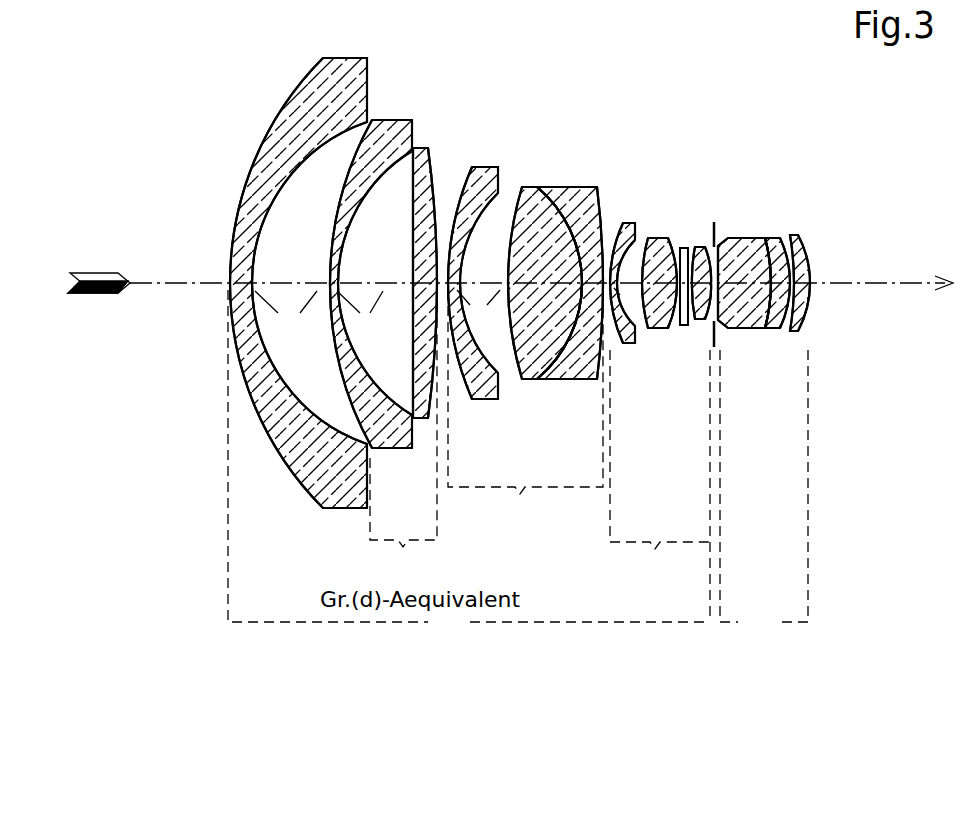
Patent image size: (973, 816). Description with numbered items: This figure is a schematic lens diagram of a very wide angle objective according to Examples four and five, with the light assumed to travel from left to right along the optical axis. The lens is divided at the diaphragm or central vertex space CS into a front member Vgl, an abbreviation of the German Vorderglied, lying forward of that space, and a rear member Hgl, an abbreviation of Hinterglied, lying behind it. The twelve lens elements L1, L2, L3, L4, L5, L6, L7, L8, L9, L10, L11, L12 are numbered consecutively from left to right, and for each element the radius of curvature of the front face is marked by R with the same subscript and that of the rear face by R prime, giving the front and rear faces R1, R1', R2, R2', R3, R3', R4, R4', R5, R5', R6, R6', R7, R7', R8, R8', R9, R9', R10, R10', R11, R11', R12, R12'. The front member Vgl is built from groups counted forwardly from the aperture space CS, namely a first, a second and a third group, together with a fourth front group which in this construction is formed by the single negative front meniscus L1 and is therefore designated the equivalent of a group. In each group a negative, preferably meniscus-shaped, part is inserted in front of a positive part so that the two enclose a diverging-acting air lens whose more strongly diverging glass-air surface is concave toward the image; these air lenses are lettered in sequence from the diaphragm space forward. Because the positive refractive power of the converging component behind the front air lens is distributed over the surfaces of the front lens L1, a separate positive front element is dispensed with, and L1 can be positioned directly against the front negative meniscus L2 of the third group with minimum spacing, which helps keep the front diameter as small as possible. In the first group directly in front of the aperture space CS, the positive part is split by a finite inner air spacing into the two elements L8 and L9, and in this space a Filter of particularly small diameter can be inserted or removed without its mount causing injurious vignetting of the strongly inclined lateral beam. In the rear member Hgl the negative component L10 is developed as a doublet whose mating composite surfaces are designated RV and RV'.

The front negative meniscus lens element L1 is at (343, 510).
The front negative meniscus of group Gr.(c) L2 is at (393, 452).
The third lens element L3 is at (423, 418).
The fourth lens element L4 is at (486, 400).
The fifth lens element L5 is at (530, 380).
The sixth lens element L6 is at (570, 380).
The seventh lens element L7 is at (627, 344).
The eighth lens element L8 is at (655, 329).
The ninth lens element L9 is at (702, 320).
The negative doublet component L10 is at (745, 329).
The eleventh lens element L11 is at (778, 330).
The twelfth lens element L12 is at (796, 332).
The front face radius of L1 R1 is at (276, 283).
The rear face radius of L1 R1' is at (309, 283).
The front face radius of L2 R2 is at (332, 284).
The rear face radius of L2 R2' is at (375, 283).
The front face radius of L3 R3 is at (394, 283).
The rear face radius of L3 R3' is at (431, 241).
The front face radius of L4 R4 is at (462, 254).
The rear face radius of L4 R4' is at (482, 223).
The front face radius of L5 R5 is at (523, 251).
The rear face radius of L5 R5' is at (551, 214).
The front face radius of L6 R6 is at (561, 254).
The rear face radius of L6 R6' is at (583, 226).
The front face radius of L7 R7 is at (622, 259).
The rear face radius of L7 R7' is at (622, 221).
The front face radius of L8 R8 is at (660, 235).
The rear face radius of L8 R8' is at (676, 252).
The front face radius of L9 R9 is at (722, 232).
The rear face radius of L9 R9' is at (735, 247).
The front face radius of L10 R10 is at (763, 236).
The rear face radius of L10 R10' is at (800, 251).
The front face radius of L11 R11 is at (816, 234).
The rear face radius of L11 R11' is at (845, 243).
The front face radius of L12 R12 is at (845, 272).
The rear face radius of L12 R12' is at (839, 283).
The mating composite surface of doublet L10 RV is at (817, 366).
The mating composite surface of doublet L10 RV' is at (836, 339).
The filter Filter is at (684, 253).
The central aperture or diaphragm space CS is at (714, 347).
The front member Vgl is at (469, 463).
The rear member Hgl is at (764, 490).